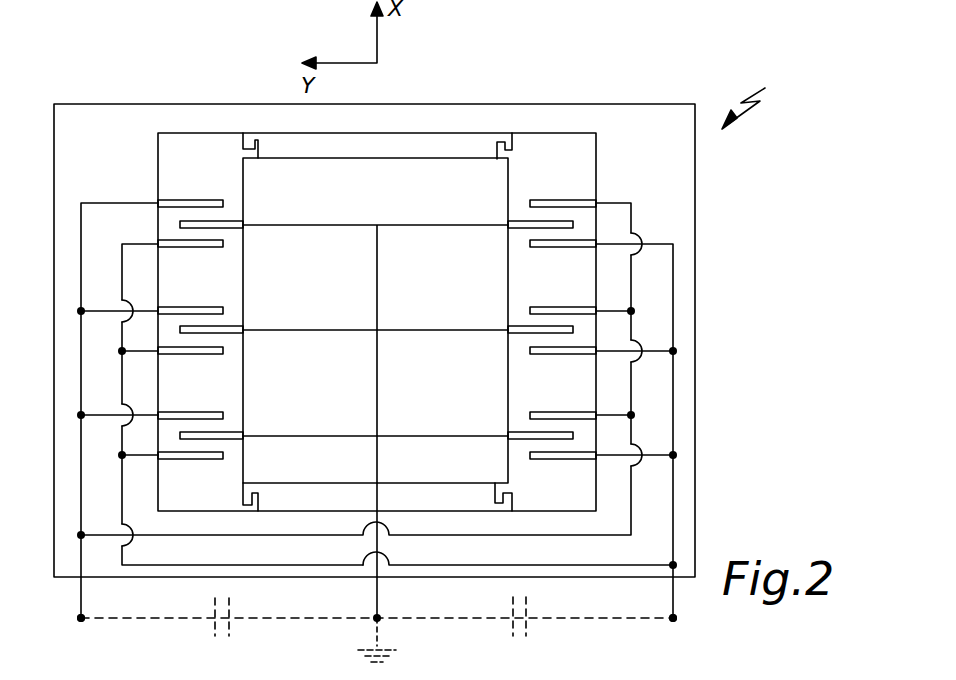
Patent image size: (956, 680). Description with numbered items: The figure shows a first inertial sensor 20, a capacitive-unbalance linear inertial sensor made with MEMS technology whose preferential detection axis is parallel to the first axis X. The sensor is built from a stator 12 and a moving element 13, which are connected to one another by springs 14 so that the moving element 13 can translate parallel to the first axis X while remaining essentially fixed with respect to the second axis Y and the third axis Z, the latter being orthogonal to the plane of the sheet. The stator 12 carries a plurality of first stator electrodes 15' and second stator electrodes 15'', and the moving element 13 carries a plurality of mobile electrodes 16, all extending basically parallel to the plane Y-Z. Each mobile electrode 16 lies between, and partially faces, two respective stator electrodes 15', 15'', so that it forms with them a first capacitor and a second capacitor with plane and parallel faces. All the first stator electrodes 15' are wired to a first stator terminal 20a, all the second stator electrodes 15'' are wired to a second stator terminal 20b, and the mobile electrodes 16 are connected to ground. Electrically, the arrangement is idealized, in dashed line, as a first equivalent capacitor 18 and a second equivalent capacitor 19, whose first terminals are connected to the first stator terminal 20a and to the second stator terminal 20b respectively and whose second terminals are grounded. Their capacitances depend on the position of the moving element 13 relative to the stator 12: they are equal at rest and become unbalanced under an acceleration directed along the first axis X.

The stator 12 is at (88, 118).
The moving element 13 is at (287, 175).
The springs 14 is at (242, 148).
The first stator electrodes 15' is at (377, 287).
The second stator electrodes 15'' is at (377, 371).
The mobile electrodes 16 is at (230, 229).
The first equivalent capacitor 18 is at (212, 630).
The second equivalent capacitor 19 is at (507, 629).
The first inertial sensor 20 is at (753, 96).
The first stator terminal 20a is at (80, 619).
The second stator terminal 20b is at (672, 620).